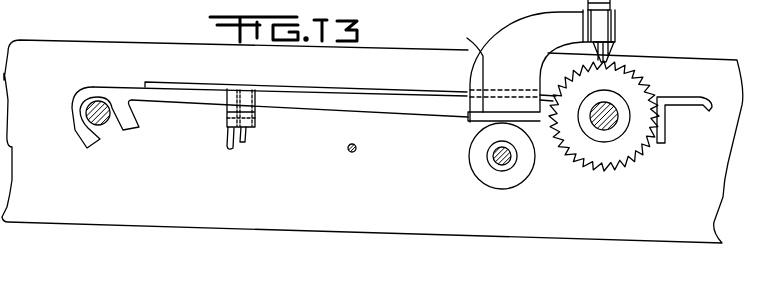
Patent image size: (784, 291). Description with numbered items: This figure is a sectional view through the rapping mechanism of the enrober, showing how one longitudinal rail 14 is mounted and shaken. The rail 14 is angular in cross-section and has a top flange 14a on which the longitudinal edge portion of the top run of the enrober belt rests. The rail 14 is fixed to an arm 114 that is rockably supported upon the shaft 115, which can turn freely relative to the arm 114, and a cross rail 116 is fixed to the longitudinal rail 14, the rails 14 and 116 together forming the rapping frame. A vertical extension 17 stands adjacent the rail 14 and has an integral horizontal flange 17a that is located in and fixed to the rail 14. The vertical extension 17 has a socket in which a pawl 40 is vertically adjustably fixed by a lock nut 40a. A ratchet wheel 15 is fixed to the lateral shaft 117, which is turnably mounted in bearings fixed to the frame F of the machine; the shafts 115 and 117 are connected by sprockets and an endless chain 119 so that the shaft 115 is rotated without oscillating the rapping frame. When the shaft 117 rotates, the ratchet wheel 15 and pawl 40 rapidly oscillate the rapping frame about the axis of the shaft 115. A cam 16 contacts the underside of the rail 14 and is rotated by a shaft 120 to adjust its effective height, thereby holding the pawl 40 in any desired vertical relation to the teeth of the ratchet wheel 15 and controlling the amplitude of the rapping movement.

The frame F is at (697, 68).
The longitudinal rail 14 is at (325, 107).
The top flange 14a is at (382, 90).
The arm 114 is at (118, 87).
The shaft 115 is at (100, 118).
The cross rail 116 is at (243, 130).
The vertical extension 17 is at (537, 22).
The horizontal flange 17a is at (467, 68).
The endless chain 119 is at (420, 6).
The pawl 40 is at (608, 52).
The lock nut 40a is at (610, 3).
The ratchet wheel 15 is at (628, 155).
The lateral shaft 117 is at (607, 127).
The cam 16 is at (477, 162).
The shaft 120 is at (513, 157).